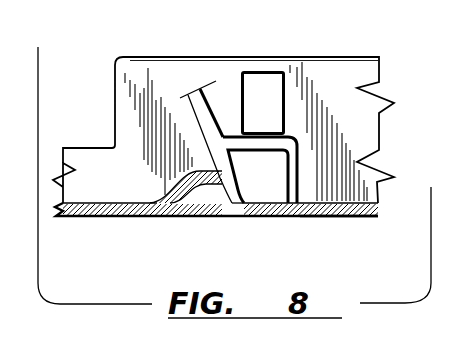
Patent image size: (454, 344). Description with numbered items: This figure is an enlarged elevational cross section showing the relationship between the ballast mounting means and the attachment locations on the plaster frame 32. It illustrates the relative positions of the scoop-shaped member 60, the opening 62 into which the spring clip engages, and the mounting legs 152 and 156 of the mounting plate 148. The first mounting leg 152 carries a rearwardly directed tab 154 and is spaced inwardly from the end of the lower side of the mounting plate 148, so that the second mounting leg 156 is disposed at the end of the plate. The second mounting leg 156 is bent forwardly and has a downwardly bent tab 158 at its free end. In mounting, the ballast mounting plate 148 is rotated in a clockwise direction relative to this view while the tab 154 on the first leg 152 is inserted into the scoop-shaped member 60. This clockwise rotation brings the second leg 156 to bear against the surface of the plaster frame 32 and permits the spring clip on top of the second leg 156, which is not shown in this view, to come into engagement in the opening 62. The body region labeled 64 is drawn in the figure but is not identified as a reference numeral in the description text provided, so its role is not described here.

The housing body 64 is at (185, 77).
The opening 62 is at (264, 82).
The mounting plate 148 is at (203, 84).
The second mounting leg 156 is at (282, 143).
The first mounting leg 152 is at (245, 192).
The tab 154 is at (218, 197).
The scoop-shaped member 60 is at (172, 188).
The plaster frame 32 is at (97, 219).
The downwardly bent tab 158 is at (347, 218).